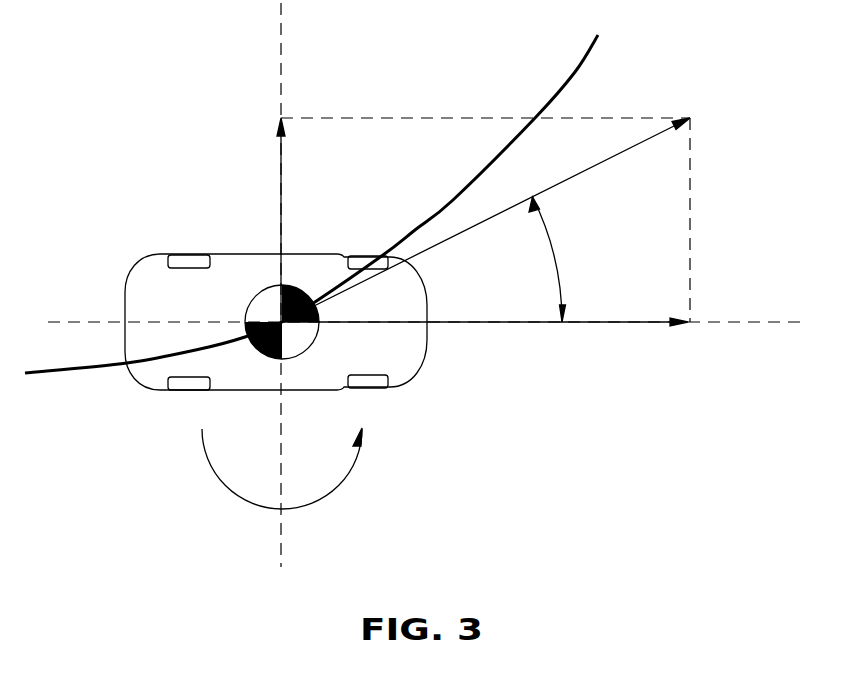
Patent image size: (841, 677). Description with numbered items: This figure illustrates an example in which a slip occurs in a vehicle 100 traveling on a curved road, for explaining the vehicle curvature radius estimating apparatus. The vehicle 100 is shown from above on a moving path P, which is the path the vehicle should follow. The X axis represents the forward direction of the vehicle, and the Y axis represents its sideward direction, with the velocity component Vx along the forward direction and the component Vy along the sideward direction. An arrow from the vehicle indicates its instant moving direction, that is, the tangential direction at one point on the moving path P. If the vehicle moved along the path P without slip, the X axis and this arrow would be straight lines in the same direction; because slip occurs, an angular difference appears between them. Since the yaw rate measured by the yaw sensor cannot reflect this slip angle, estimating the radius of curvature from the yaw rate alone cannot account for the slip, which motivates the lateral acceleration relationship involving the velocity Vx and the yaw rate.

The vehicle 100 is at (413, 370).
The moving path P is at (575, 72).
The velocity of the vehicle Vx is at (485, 345).
The lateral velocity component Vy is at (260, 220).